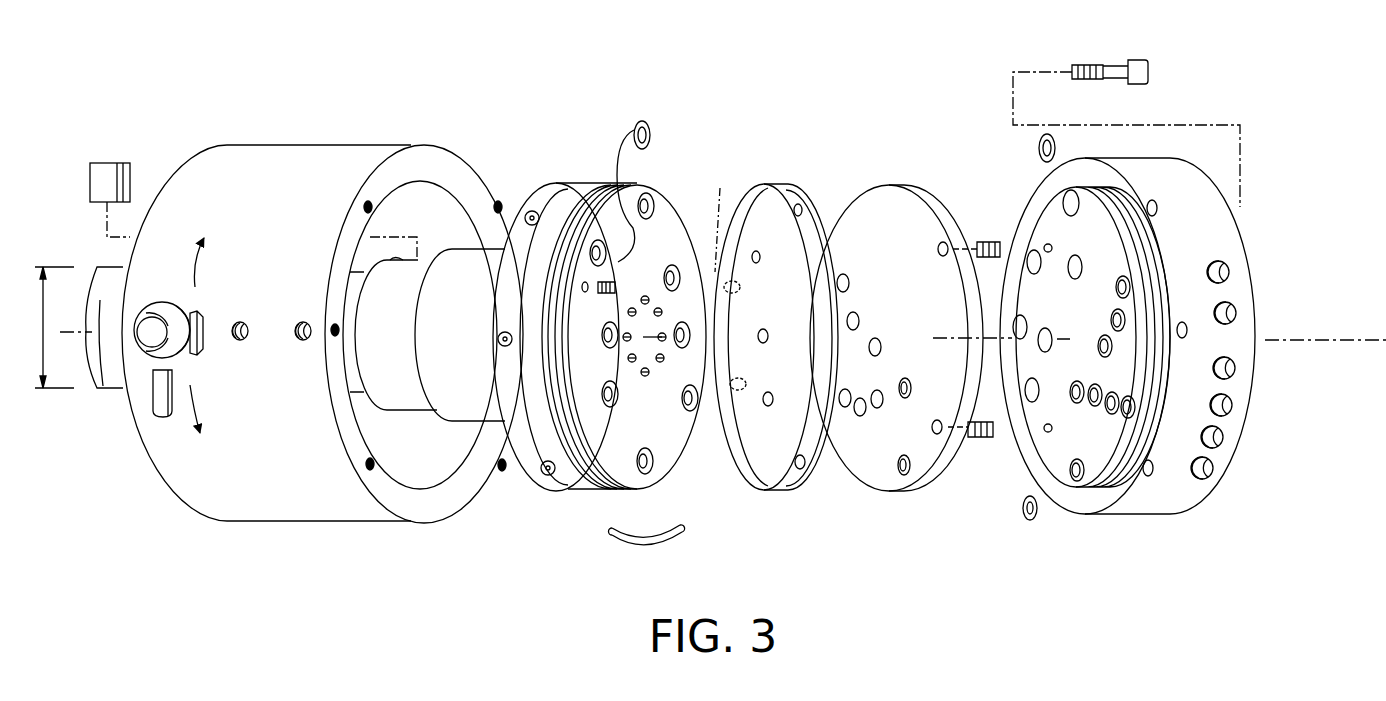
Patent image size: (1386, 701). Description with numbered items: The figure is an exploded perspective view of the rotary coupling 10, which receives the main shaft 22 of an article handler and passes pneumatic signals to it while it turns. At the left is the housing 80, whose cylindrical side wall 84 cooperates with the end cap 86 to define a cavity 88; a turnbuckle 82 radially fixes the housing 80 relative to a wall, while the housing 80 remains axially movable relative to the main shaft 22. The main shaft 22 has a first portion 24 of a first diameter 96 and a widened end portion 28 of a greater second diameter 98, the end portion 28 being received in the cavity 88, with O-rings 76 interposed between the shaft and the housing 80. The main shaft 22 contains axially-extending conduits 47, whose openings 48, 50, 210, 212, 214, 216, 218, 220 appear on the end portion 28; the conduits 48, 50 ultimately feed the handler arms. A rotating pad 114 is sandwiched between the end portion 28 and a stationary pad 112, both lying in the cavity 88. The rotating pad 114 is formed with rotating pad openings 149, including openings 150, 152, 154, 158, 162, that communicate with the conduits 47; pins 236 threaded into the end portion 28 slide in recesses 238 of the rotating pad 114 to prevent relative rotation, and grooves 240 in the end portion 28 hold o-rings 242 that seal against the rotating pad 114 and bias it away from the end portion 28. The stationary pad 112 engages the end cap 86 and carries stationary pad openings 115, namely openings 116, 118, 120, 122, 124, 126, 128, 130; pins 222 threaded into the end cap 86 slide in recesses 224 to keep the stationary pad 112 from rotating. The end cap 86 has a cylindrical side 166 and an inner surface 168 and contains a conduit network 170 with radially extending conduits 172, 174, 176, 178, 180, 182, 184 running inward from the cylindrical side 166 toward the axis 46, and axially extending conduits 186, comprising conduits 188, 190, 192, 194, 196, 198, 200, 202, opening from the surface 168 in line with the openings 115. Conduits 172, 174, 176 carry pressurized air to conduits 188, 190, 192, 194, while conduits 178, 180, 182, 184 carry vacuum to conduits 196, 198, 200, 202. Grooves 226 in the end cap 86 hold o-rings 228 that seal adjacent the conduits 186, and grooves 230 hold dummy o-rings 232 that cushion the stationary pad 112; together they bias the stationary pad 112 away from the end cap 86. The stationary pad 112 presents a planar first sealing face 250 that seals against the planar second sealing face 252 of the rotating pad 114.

The rotary coupling 10 is at (456, 74).
The main shaft 22 is at (112, 389).
The first portion 24 is at (463, 390).
The end portion 28 is at (598, 179).
The axis 46 is at (1344, 336).
The axially-extending conduits 47 is at (645, 222).
The conduit 48 is at (654, 194).
The conduit 50 is at (660, 477).
The O-rings 76 is at (667, 540).
The housing 80 is at (337, 542).
The turnbuckle 82 is at (166, 384).
The cylindrical side wall 84 is at (250, 314).
The end cap 86 is at (1140, 340).
The cavity 88 is at (433, 202).
The first diameter 96 is at (50, 327).
The second diameter 98 is at (630, 319).
The stationary pad 112 is at (908, 316).
The rotating pad 114 is at (775, 306).
The stationary pad openings 115 is at (918, 451).
The opening 116 is at (903, 454).
The opening 118 is at (906, 377).
The opening 120 is at (877, 389).
The opening 122 is at (860, 416).
The opening 124 is at (845, 389).
The opening 126 is at (878, 339).
The opening 128 is at (857, 314).
The opening 130 is at (847, 278).
The rotating pad openings 149 is at (758, 318).
The opening 150 is at (803, 205).
The opening 152 is at (800, 455).
The opening 154 is at (761, 255).
The opening 158 is at (768, 331).
The opening 162 is at (770, 392).
The cylindrical side 166 is at (1213, 227).
The inner surface 168 is at (1060, 201).
The conduit network 170 is at (1200, 524).
The radially extending conduit 172 is at (1138, 520).
The radially extending conduit 174 is at (1218, 477).
The radially extending conduit 176 is at (1230, 441).
The radially extending conduit 178 is at (1239, 405).
The radially extending conduit 180 is at (1242, 368).
The radially extending conduit 182 is at (1243, 310).
The radially extending conduit 184 is at (1236, 265).
The axially extending conduits 186 is at (1118, 344).
The axially extending conduit 188 is at (1074, 486).
The axially extending conduit 190 is at (1070, 390).
The axially extending conduit 192 is at (1092, 419).
The axially extending conduit 194 is at (1115, 393).
The axially extending conduit 196 is at (1141, 406).
The axially extending conduit 198 is at (1097, 339).
The axially extending conduit 200 is at (1111, 313).
The axially extending conduit 202 is at (1117, 277).
The opening 210 is at (679, 265).
The opening 212 is at (606, 243).
The opening 214 is at (701, 334).
The opening 216 is at (602, 344).
The opening 218 is at (706, 422).
The opening 220 is at (623, 401).
The pins 222 is at (980, 241).
The recesses 224 is at (943, 242).
The grooves 226 is at (1070, 403).
The o-rings 228 is at (1025, 518).
The grooves 230 is at (1070, 216).
The o-rings 232 is at (1056, 145).
The pins 236 is at (603, 295).
The recesses 238 is at (750, 362).
The grooves 240 is at (657, 212).
The o-rings 242 is at (648, 122).
The first sealing face 250 is at (852, 196).
The second sealing face 252 is at (769, 210).